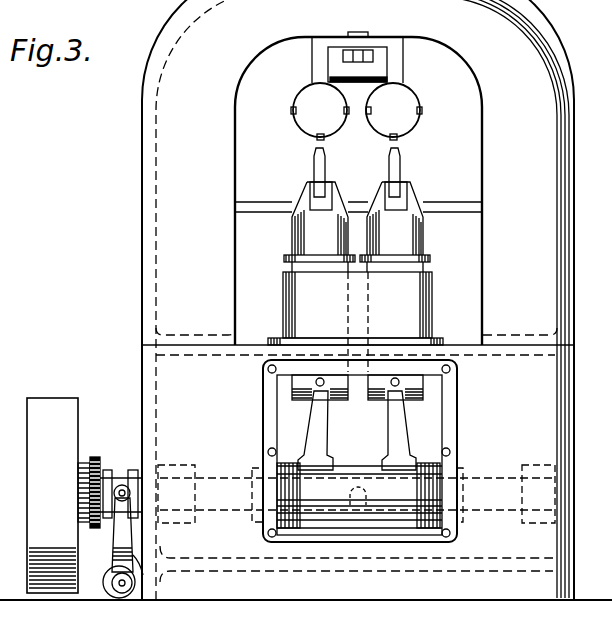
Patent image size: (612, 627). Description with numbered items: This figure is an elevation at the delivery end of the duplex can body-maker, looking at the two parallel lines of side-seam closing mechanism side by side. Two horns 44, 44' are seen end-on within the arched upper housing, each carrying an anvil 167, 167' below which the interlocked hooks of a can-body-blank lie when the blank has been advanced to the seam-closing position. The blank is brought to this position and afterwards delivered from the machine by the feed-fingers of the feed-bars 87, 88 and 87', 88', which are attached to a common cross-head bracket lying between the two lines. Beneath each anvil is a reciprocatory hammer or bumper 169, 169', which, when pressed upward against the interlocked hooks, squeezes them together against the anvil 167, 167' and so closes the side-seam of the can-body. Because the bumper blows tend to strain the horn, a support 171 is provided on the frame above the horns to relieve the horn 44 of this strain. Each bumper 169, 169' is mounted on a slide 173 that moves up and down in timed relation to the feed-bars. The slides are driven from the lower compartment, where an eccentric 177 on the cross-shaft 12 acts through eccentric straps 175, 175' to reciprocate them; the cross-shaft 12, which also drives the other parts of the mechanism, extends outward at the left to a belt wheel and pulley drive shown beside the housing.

The cross-shaft 12 is at (143, 490).
The horn 44 is at (320, 110).
The horn 44' is at (393, 110).
The feed-bar 87 is at (355, 95).
The feed-bar 87' is at (445, 118).
The feed-bar 88 is at (271, 101).
The feed-bar 88' is at (354, 130).
The anvil 167 is at (286, 143).
The anvil 167' is at (421, 142).
The bumper 169 is at (290, 172).
The bumper 169' is at (423, 172).
The support 171 is at (393, 48).
The slide 173 is at (297, 236).
The eccentric strap 175 is at (335, 422).
The eccentric strap 175' is at (435, 422).
The eccentric 177 is at (288, 470).